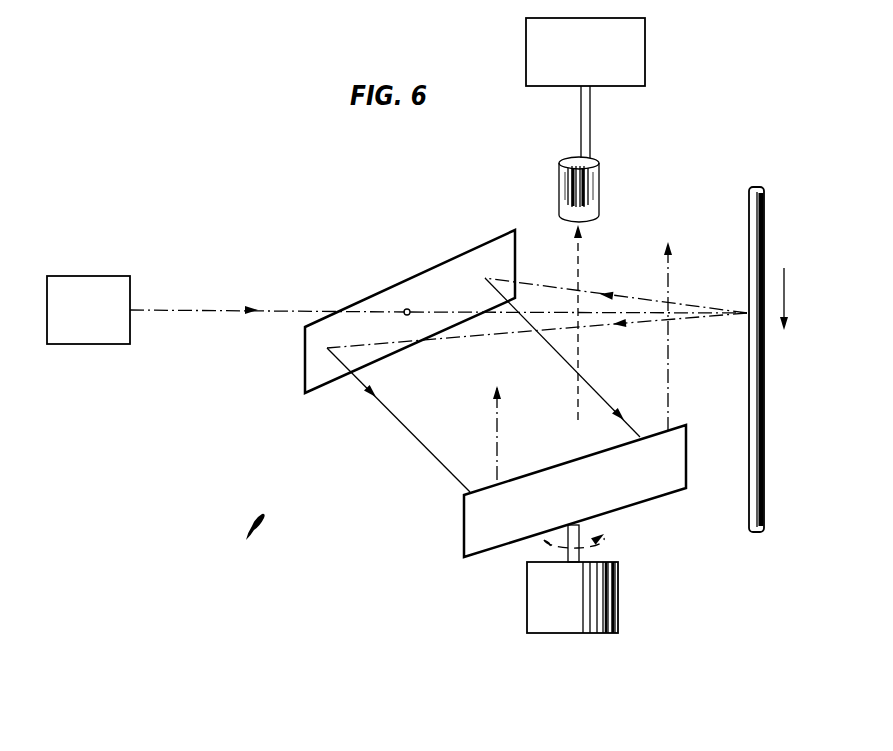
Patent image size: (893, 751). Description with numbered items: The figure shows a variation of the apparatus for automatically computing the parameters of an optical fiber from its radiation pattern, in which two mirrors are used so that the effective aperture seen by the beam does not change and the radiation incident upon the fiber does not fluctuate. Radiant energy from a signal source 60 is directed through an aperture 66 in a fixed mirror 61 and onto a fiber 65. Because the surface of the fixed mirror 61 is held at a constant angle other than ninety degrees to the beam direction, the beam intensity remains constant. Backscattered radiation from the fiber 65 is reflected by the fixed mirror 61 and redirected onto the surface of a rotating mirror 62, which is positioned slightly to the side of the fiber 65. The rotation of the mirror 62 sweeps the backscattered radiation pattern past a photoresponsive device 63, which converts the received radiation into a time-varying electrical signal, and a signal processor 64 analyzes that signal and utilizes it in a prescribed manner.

The signal source 60 is at (100, 258).
The fixed mirror 61 is at (475, 258).
The rotating mirror 62 is at (660, 486).
The photoresponsive device 63 is at (600, 183).
The signal processor 64 is at (645, 58).
The fiber 65 is at (749, 218).
The aperture 66 is at (408, 308).